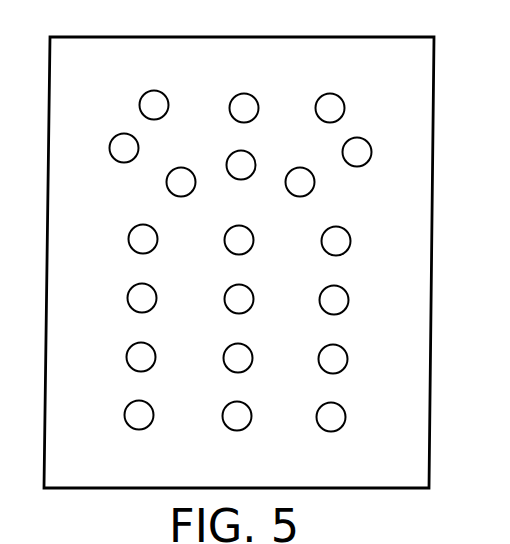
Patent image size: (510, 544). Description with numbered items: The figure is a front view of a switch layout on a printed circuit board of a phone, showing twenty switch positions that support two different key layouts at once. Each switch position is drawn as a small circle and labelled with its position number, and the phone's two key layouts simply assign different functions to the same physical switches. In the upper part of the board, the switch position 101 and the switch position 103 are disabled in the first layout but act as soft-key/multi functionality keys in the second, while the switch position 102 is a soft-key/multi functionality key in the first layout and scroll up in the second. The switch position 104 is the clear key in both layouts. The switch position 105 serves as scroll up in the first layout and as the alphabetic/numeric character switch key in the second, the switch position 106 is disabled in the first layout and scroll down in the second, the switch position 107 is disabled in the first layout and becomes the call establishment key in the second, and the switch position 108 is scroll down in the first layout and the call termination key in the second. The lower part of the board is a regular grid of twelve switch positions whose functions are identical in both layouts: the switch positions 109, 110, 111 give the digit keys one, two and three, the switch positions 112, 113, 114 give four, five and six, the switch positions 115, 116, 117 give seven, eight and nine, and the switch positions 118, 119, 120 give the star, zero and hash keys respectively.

The switch position 101 is at (153, 91).
The switch position 102 is at (238, 95).
The switch position 103 is at (330, 94).
The switch position 104 is at (111, 141).
The switch position 105 is at (369, 145).
The switch position 106 is at (250, 154).
The switch position 107 is at (168, 186).
The switch position 108 is at (311, 191).
The switch position 109 is at (156, 238).
The switch position 110 is at (252, 239).
The switch position 111 is at (349, 240).
The switch position 112 is at (155, 297).
The switch position 113 is at (252, 298).
The switch position 114 is at (347, 299).
The switch position 115 is at (154, 356).
The switch position 116 is at (251, 357).
The switch position 117 is at (346, 358).
The switch position 118 is at (152, 414).
The switch position 119 is at (250, 415).
The switch position 120 is at (344, 416).